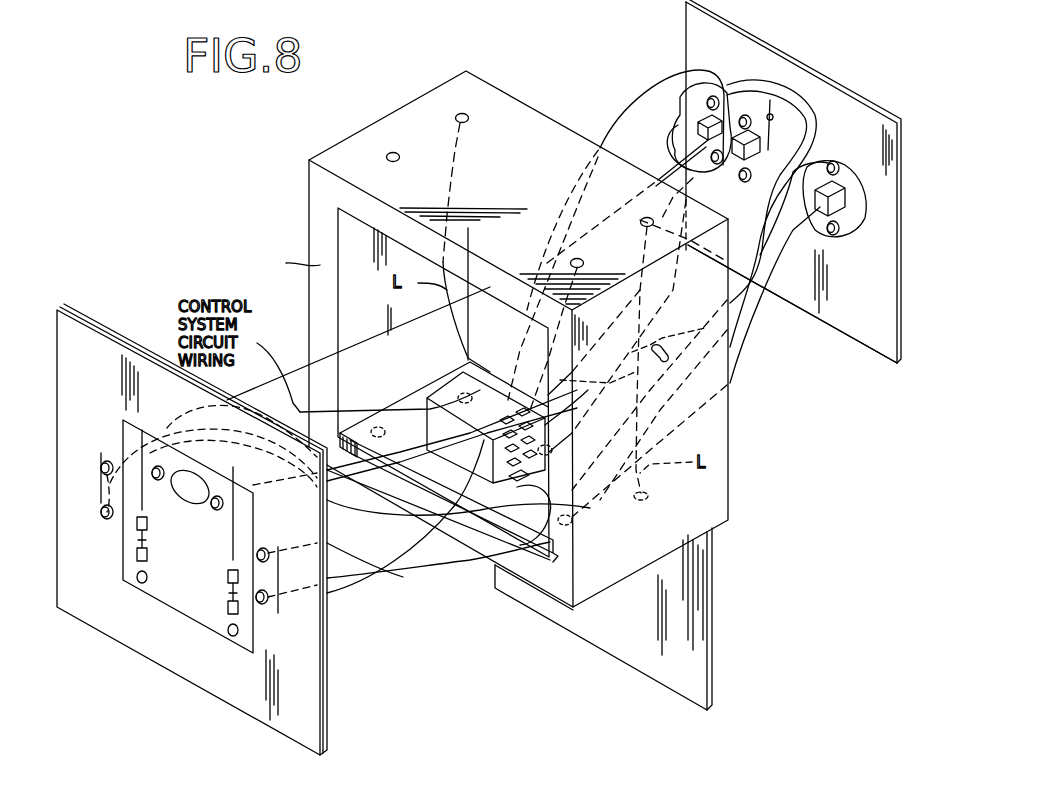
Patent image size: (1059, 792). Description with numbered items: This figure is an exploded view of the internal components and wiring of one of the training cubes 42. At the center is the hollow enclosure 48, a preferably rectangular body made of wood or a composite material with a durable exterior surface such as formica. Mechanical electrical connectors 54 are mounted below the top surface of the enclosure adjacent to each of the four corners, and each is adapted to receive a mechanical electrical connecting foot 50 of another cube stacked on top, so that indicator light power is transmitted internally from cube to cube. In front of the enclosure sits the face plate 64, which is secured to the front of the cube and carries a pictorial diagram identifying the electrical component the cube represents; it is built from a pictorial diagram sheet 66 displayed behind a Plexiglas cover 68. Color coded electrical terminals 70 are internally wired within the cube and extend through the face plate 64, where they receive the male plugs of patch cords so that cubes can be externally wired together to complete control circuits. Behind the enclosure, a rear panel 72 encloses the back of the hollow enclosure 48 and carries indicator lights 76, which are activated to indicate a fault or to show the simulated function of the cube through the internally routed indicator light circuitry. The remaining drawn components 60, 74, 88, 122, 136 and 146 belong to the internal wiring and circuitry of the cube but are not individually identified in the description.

The cube 42 is at (305, 227).
The hollow enclosure 48 is at (289, 266).
The mechanical electrical connecting foot 50 is at (648, 492).
The mechanical electrical connector 54 is at (457, 108).
The top hole 60 is at (388, 153).
The face plate 64 is at (52, 388).
The pictorial diagram sheet 66 is at (95, 320).
The Plexiglas cover 68 is at (68, 305).
The color coded electrical terminal 70 is at (98, 463).
The rear panel 72 is at (850, 324).
The terminal block 74 is at (762, 148).
The indicator light 76 is at (746, 112).
The grommet 88 is at (668, 348).
The circuit board 122 is at (520, 489).
The bracket 136 is at (614, 380).
The terminal connector 146 is at (505, 440).